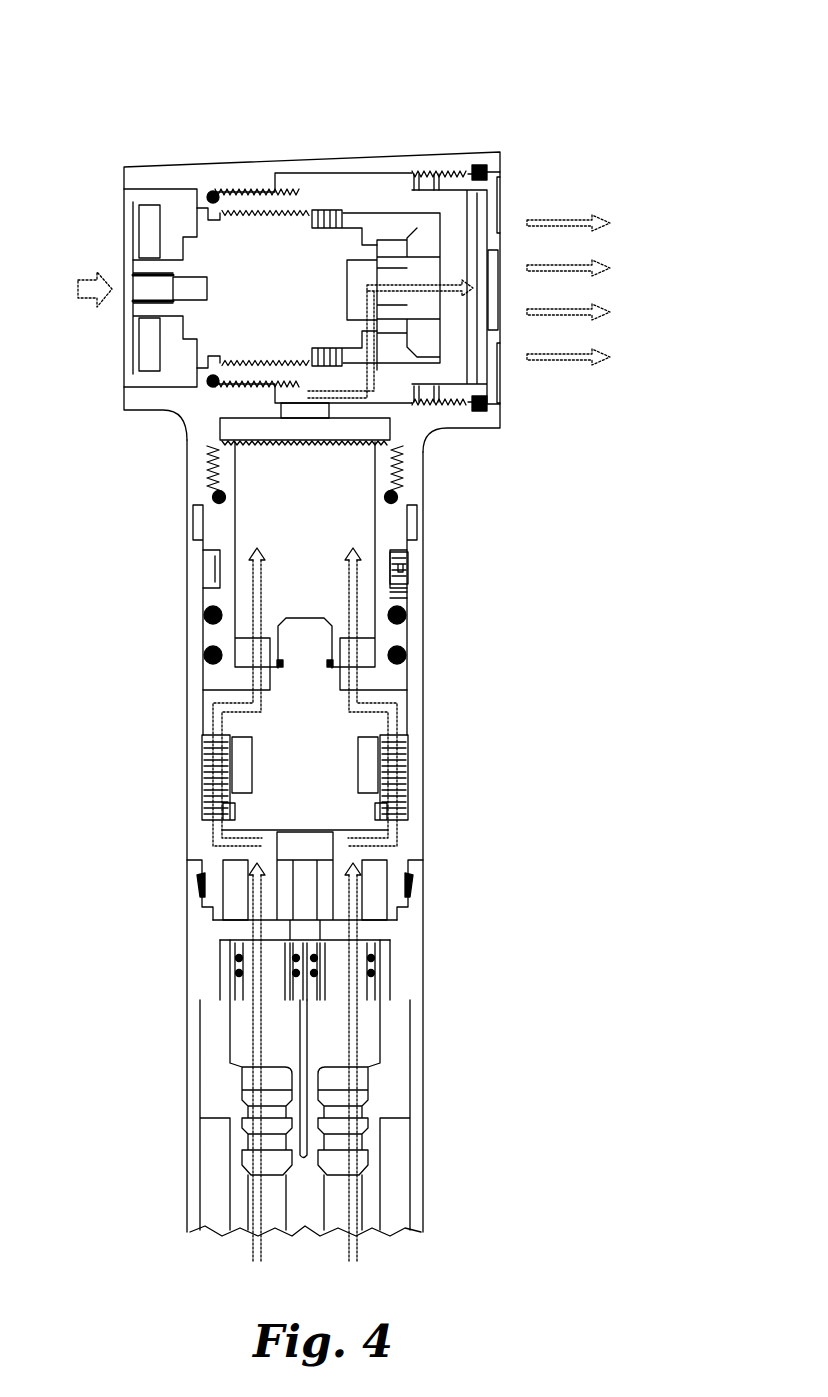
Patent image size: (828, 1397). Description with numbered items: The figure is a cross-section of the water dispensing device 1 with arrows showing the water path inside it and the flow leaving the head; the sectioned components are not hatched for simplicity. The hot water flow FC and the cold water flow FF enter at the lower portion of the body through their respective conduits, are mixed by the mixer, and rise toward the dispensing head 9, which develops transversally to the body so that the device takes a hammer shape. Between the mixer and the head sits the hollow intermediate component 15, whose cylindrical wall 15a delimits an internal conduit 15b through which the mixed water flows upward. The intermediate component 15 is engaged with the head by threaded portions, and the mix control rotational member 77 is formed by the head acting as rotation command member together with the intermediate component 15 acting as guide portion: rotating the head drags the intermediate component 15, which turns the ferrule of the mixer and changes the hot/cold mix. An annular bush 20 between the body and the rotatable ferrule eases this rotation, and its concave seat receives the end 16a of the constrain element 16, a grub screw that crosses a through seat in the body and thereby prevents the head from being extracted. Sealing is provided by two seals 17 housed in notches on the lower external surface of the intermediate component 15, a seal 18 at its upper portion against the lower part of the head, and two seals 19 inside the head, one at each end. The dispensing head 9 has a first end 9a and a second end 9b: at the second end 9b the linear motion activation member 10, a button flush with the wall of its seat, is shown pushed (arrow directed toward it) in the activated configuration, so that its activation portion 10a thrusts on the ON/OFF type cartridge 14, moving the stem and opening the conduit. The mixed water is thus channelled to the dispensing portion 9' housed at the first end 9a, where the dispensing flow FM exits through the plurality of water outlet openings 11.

The water dispensing device 1 is at (395, 93).
The dispensing head 9 is at (340, 263).
The first end of the dispensing head 9a is at (478, 151).
The second end of the dispensing head 9b is at (160, 166).
The dispensing portion 9' is at (504, 418).
The seals 19 is at (212, 191).
The ON/OFF type cartridge 14 is at (443, 234).
The water outlet openings 11 is at (500, 214).
The dispensing flow FM is at (585, 230).
The linear motion activation member 10 is at (122, 308).
The activation portion 10a is at (155, 290).
The mix control rotational member 77 is at (213, 463).
The seal 18 is at (213, 497).
The cylindrical wall 15a is at (213, 530).
The internal conduit 15b is at (345, 500).
The end of the grub screw 16a is at (400, 535).
The constrain element 16 is at (402, 570).
The bush 20 is at (393, 598).
The seals 17 is at (403, 615).
The intermediate component 15 is at (404, 689).
The hot water flow FC is at (253, 1247).
The cold water flow FF is at (357, 1247).